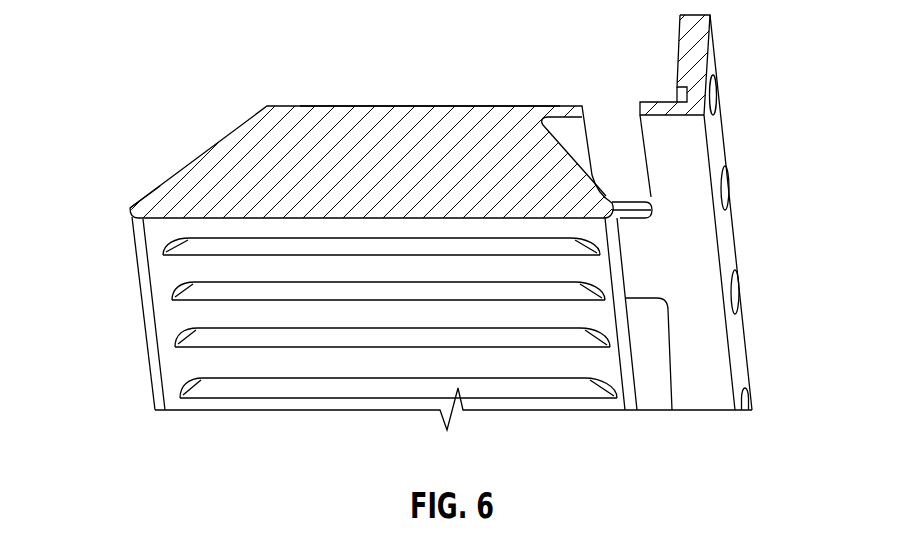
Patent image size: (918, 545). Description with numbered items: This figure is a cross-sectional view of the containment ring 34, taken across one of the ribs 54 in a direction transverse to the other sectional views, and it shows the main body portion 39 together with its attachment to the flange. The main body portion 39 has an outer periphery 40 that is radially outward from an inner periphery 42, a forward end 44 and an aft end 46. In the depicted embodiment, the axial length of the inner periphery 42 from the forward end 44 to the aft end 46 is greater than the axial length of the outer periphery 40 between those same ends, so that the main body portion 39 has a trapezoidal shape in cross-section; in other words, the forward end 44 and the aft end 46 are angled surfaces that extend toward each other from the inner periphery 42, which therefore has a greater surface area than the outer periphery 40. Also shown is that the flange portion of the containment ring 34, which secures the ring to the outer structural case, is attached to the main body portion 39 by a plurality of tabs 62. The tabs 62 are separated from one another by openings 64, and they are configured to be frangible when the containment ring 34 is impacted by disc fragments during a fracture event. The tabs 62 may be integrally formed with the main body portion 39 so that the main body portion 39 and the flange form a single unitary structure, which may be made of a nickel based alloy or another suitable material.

The containment ring 34 is at (455, 78).
The main body portion 39 is at (368, 102).
The outer periphery 40 is at (425, 106).
The inner periphery 42 is at (205, 370).
The forward end 44 is at (130, 208).
The aft end 46 is at (653, 198).
The ribs 54 is at (332, 272).
The tabs 62 is at (632, 235).
The openings 64 is at (673, 377).